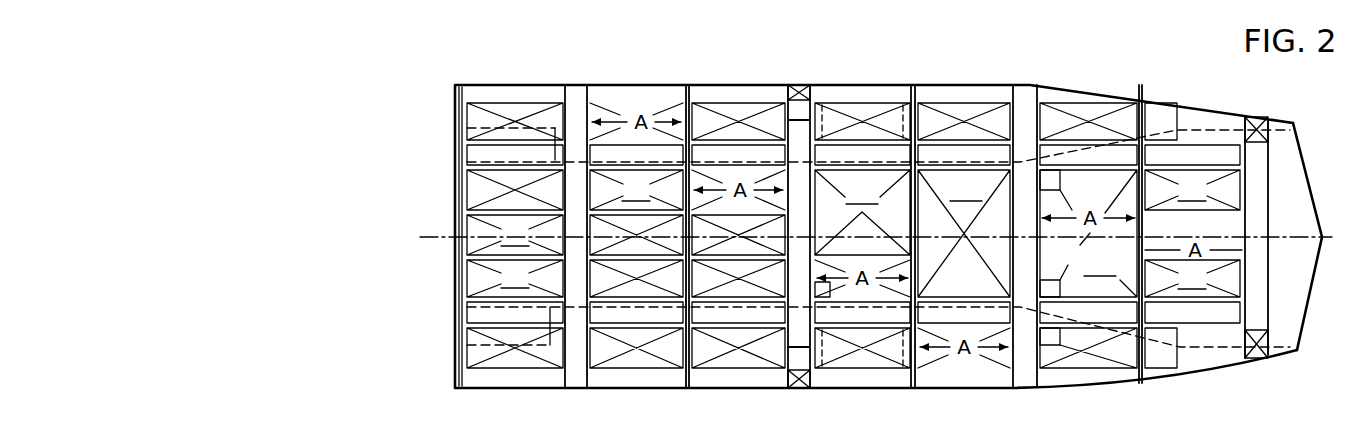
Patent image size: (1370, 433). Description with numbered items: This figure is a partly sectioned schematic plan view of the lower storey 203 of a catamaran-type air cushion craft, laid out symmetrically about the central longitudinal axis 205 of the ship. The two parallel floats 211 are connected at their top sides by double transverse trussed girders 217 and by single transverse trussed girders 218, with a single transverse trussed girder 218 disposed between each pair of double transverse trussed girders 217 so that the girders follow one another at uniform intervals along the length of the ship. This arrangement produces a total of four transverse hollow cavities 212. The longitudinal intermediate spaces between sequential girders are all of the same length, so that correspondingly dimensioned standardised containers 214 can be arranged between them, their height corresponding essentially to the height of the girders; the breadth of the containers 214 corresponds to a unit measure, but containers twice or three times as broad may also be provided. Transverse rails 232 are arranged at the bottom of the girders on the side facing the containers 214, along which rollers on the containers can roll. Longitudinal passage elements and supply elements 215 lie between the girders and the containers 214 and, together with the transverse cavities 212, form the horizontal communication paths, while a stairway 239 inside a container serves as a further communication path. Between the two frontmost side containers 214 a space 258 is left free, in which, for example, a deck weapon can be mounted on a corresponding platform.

The lower storey 203 is at (521, 377).
The central longitudinal axis 205 is at (427, 237).
The float 211 is at (710, 100).
The transverse hollow cavity 212 is at (576, 100).
The container 214 is at (472, 356).
The longitudinal passage element and supply element 215 is at (472, 155).
The double transverse trussed girder 217 is at (591, 96).
The single transverse trussed girder 218 is at (457, 90).
The transverse rail 232 is at (465, 388).
The stairway 239 is at (1060, 180).
The space 258 is at (1305, 215).